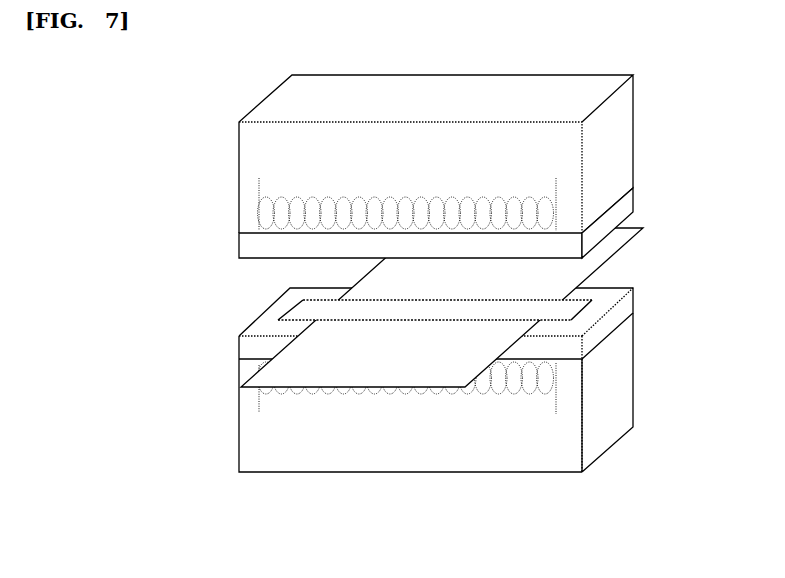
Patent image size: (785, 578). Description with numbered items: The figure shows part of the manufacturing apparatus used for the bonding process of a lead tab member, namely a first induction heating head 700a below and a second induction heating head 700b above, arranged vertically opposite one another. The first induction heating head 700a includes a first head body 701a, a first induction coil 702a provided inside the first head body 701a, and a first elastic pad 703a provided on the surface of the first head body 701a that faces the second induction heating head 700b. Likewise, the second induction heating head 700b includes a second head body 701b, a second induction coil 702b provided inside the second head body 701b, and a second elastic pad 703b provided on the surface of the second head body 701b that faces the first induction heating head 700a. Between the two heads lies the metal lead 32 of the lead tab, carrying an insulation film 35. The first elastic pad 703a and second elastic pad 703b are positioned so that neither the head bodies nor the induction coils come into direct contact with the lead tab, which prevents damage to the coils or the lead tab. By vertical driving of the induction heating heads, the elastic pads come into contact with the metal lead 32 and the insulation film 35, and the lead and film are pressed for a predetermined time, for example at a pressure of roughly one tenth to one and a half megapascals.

The second induction heating head 700b is at (375, 166).
The second head body 701b is at (239, 164).
The second induction coil 702b is at (258, 212).
The second elastic pad 703b is at (239, 245).
The first induction heating head 700a is at (375, 380).
The first head body 701a is at (239, 433).
The first induction coil 702a is at (258, 400).
The first elastic pad 703a is at (239, 350).
The metal lead 32 is at (568, 272).
The insulation film 35 is at (573, 309).